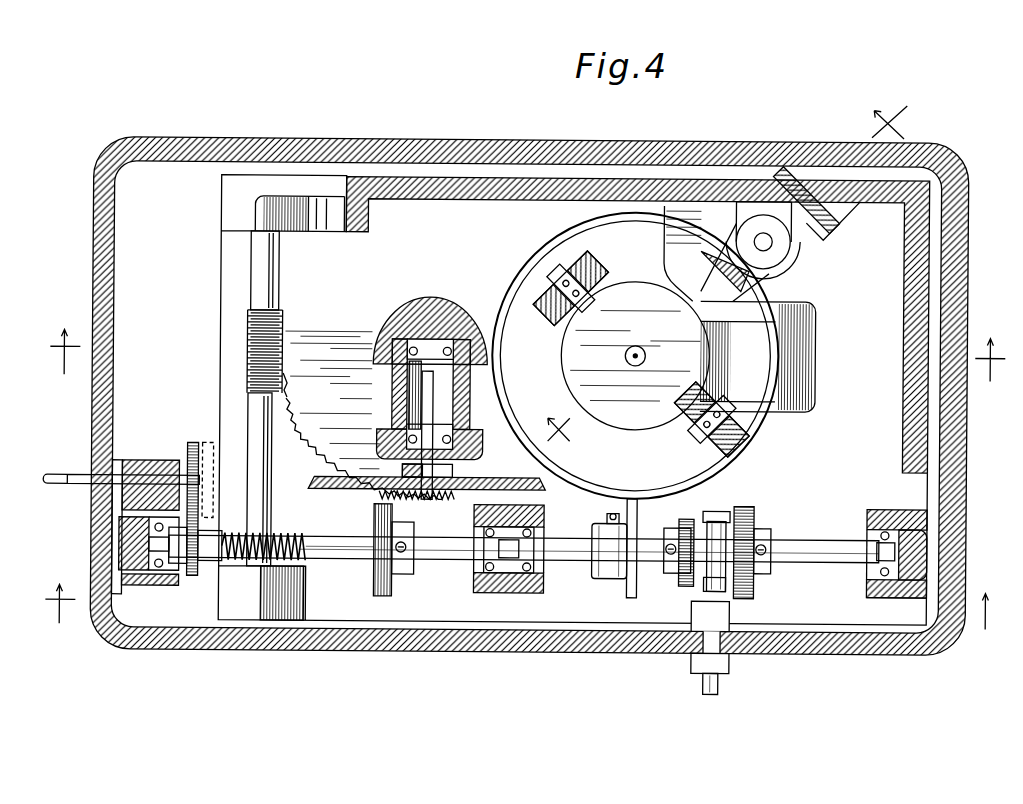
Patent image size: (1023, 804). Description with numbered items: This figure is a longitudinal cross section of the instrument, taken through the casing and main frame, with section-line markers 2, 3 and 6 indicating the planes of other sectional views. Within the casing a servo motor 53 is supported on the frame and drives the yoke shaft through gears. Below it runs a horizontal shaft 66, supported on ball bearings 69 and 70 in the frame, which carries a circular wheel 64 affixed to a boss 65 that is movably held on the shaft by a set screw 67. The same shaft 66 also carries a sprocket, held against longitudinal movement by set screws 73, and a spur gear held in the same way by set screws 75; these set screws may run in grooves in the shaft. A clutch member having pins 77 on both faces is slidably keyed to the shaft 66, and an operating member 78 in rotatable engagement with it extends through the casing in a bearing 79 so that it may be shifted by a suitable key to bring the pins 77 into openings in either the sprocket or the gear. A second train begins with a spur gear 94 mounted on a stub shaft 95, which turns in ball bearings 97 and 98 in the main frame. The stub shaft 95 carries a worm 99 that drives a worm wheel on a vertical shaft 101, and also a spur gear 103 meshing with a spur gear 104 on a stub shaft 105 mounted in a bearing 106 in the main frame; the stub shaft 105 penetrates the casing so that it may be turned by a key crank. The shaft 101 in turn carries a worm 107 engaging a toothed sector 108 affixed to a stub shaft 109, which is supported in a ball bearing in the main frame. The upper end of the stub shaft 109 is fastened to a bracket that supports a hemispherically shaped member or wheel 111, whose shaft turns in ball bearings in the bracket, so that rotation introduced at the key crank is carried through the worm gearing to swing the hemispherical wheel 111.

The section line 2- 2 is at (519, 607).
The section line 3- 3 is at (54, 351).
The section line 6- 6 is at (726, 270).
The servo motor 53 is at (820, 376).
The circular wheel 64 is at (642, 525).
The boss 65 is at (612, 578).
The shaft 66 is at (578, 561).
The set screw 67 is at (610, 517).
The ball bearing 69 is at (516, 578).
The ball bearing 70 is at (868, 584).
The set screws 73 is at (712, 584).
The set screws 75 is at (771, 548).
The pins 77 is at (756, 510).
The operating member 78 is at (720, 512).
The bearing 79 is at (728, 622).
The spur gear 94 is at (378, 594).
The stub shaft 95 is at (350, 560).
The ball bearing 97 is at (160, 590).
The ball bearing 98 is at (474, 584).
The worm 99 is at (290, 537).
The shaft 101 is at (270, 492).
The spur gear 103 is at (194, 578).
The spur gear 104 is at (194, 446).
The stub shaft 105 is at (149, 482).
The bearing 106 is at (126, 460).
The worm 107 is at (279, 323).
The toothed sector 108 is at (298, 407).
The stub shaft 109 is at (433, 318).
The hemispherically shaped member 111 is at (466, 318).